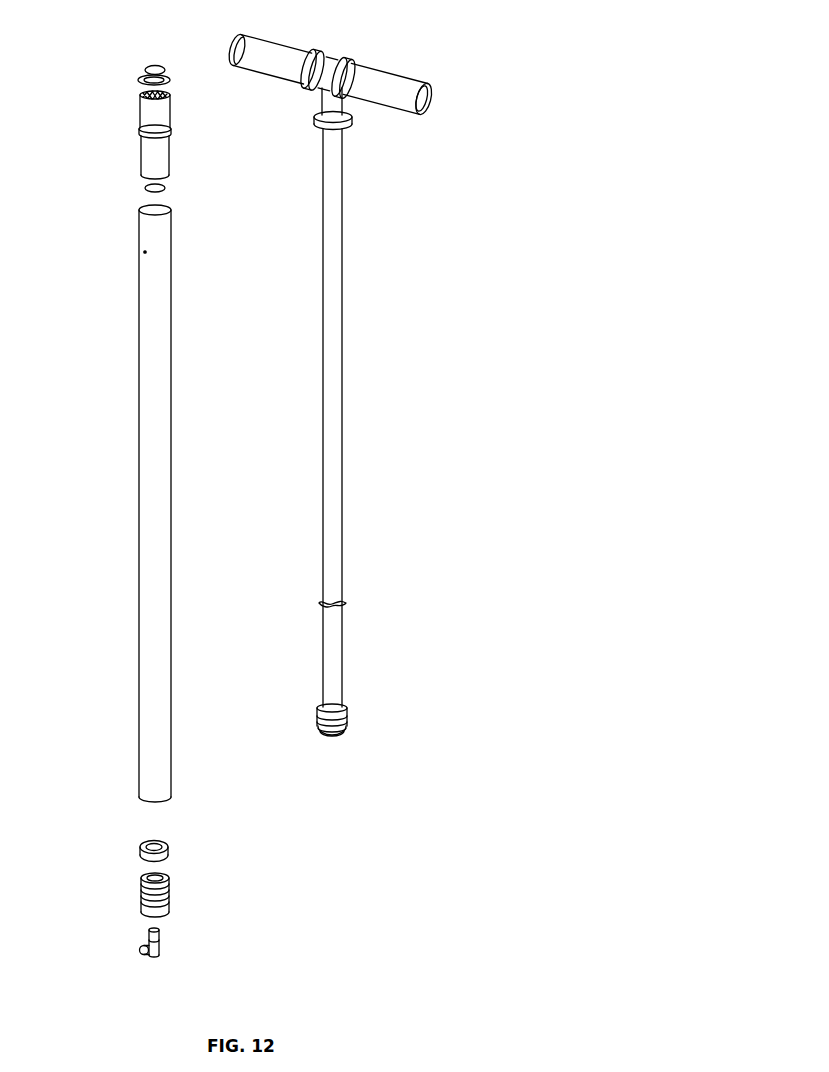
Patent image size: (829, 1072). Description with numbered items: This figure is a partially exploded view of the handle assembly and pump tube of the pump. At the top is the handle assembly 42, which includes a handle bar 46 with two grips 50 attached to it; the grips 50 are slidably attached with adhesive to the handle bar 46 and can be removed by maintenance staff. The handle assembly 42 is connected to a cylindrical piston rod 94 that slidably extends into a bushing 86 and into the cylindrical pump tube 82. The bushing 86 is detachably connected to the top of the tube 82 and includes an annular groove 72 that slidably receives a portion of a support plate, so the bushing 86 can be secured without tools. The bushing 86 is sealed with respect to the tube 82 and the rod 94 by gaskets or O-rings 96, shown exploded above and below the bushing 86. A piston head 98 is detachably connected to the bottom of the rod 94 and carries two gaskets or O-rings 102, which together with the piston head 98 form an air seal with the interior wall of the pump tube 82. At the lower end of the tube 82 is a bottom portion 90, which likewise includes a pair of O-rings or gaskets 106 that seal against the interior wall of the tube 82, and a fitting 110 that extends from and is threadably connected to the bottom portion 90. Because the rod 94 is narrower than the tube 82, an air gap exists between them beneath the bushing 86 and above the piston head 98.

The handle assembly 42 is at (355, 146).
The handle bar 46 is at (324, 60).
The grips 50 is at (400, 80).
The annular groove 72 is at (171, 129).
The pump tube 82 is at (148, 492).
The bushing 86 is at (160, 115).
The bottom portion 90 is at (171, 897).
The piston rod 94 is at (337, 423).
The gaskets/O-rings 96 is at (143, 67).
The piston head 98 is at (343, 708).
The gaskets or O-rings 102 is at (320, 724).
The O-rings or gaskets 106 is at (169, 848).
The fitting 110 is at (147, 953).